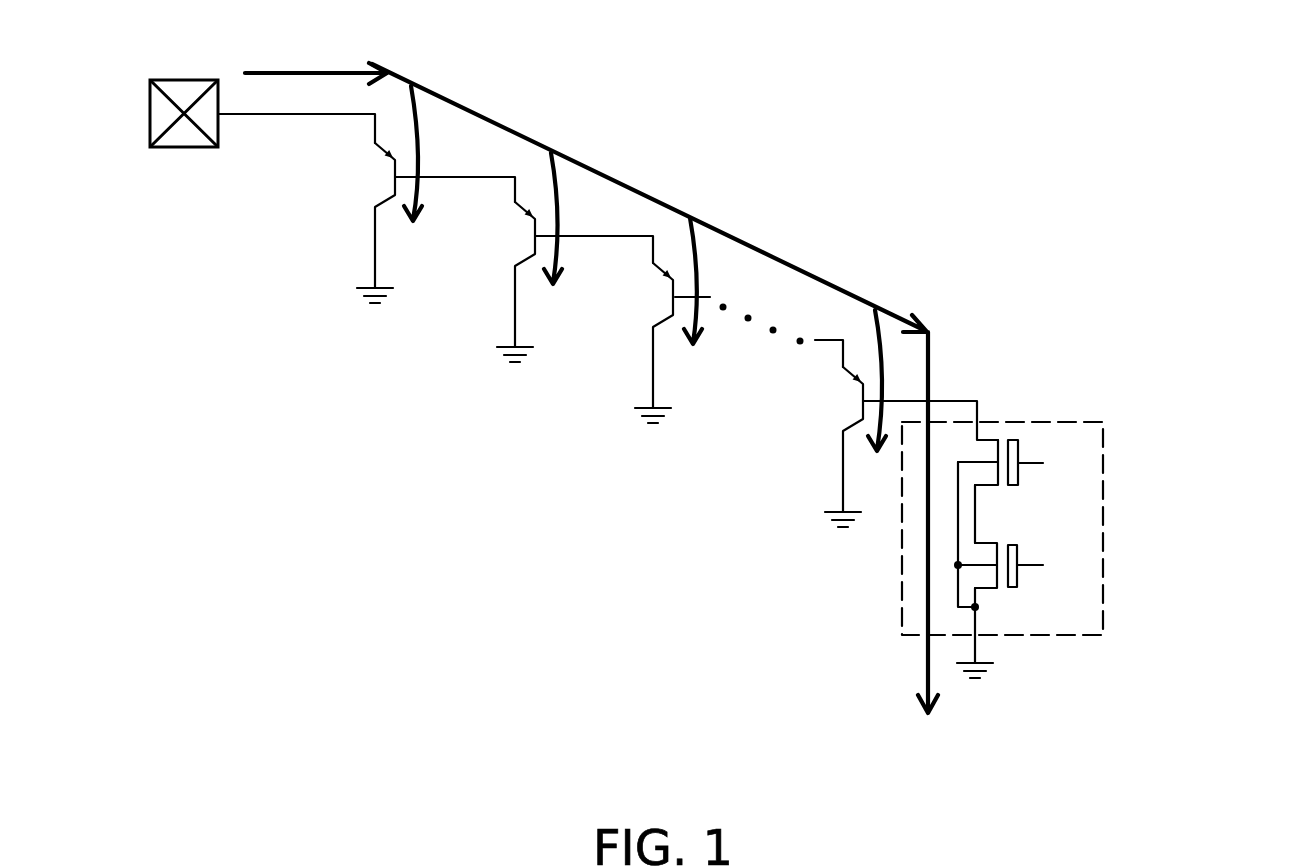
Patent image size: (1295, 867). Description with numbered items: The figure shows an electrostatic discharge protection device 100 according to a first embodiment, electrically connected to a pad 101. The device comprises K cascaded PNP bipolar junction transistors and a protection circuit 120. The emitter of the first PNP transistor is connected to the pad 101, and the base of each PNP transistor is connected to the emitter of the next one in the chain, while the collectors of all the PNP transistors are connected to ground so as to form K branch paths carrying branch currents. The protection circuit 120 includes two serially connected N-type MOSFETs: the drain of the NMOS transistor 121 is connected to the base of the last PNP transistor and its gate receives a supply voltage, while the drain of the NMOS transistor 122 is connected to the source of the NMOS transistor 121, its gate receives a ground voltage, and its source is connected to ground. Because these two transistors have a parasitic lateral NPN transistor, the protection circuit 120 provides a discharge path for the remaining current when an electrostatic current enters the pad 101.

The ESD protection device 100 is at (1294, 797).
The pad 101 is at (183, 148).
The protection circuit 120 is at (1053, 637).
The NMOS transistor 121 is at (1000, 483).
The NMOS transistor 122 is at (998, 586).